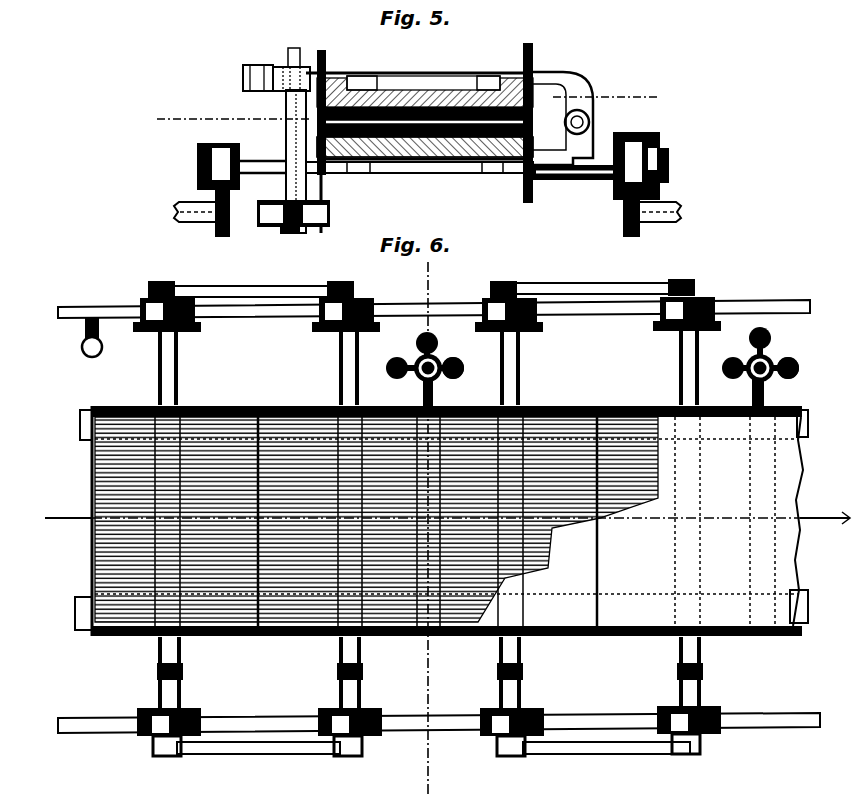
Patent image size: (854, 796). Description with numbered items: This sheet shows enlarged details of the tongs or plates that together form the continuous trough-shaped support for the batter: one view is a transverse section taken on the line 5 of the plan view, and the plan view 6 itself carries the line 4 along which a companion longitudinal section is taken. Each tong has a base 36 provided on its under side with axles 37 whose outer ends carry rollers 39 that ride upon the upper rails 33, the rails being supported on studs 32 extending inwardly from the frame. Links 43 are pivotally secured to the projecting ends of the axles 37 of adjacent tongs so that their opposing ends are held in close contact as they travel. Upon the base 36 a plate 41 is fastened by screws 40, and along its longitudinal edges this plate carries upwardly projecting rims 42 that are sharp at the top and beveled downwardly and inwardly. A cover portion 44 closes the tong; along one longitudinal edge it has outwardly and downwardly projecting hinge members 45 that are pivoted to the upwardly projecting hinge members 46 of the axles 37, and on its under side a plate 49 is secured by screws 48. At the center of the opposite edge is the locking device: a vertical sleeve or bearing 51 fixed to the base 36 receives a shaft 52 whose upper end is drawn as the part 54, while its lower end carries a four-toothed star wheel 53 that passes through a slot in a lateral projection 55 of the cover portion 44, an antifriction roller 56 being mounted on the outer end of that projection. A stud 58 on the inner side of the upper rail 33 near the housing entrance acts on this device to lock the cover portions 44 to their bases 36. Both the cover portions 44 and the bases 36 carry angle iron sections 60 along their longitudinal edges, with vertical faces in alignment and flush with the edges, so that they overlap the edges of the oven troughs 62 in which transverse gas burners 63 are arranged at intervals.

In FIG. 6, the section line 4— 4 is at (439, 518).
In FIG. 6, the section line 5— 5 is at (436, 529).
In FIG. 5, the Fig. 6 plan view 6 is at (412, 108).
In FIG. 5, the stud 32 is at (174, 214).
In FIG. 5, the upper rail 33 is at (215, 232).
In FIG. 6, the upper rail 33 is at (93, 303).
In FIG. 5, the base 36 is at (418, 160).
In FIG. 5, the axle 37 is at (262, 157).
In FIG. 6, the axle 37 is at (180, 362).
In FIG. 5, the roller 39 is at (215, 145).
In FIG. 6, the roller 39 is at (148, 330).
In FIG. 5, the screw 40 is at (383, 173).
In FIG. 6, the screw 40 is at (95, 482).
In FIG. 5, the plate 41 is at (462, 160).
In FIG. 6, the plate 41 is at (447, 521).
In FIG. 5, the rim 42 is at (317, 122).
In FIG. 6, the rim 42 is at (262, 406).
In FIG. 5, the link 43 is at (200, 175).
In FIG. 6, the link 43 is at (255, 292).
In FIG. 5, the cover portion 44 is at (410, 90).
In FIG. 5, the hinge member 45 is at (582, 78).
In FIG. 5, the hinge member 46 is at (589, 128).
In FIG. 6, the hinge member 46 is at (183, 672).
In FIG. 5, the screw 48 is at (362, 76).
In FIG. 5, the plate 49 is at (548, 85).
In FIG. 5, the sleeve or bearing 51 is at (265, 195).
In FIG. 5, the shaft 52 is at (288, 100).
In FIG. 6, the shaft 52 is at (438, 360).
In FIG. 5, the four-toothed gear or star wheel 53 is at (308, 228).
In FIG. 6, the four-toothed gear or star wheel 53 is at (464, 368).
In FIG. 5, the screw shaft 54 is at (297, 45).
In FIG. 5, the lateral projection 55 is at (278, 67).
In FIG. 5, the antifriction roller 56 is at (243, 80).
In FIG. 6, the stud 58 is at (82, 348).
In FIG. 5, the angle iron section 60 is at (331, 44).
In FIG. 6, the angle iron section 60 is at (80, 430).
In FIG. 6, the trough 62 is at (775, 355).
In FIG. 6, the gas burner 63 is at (799, 366).